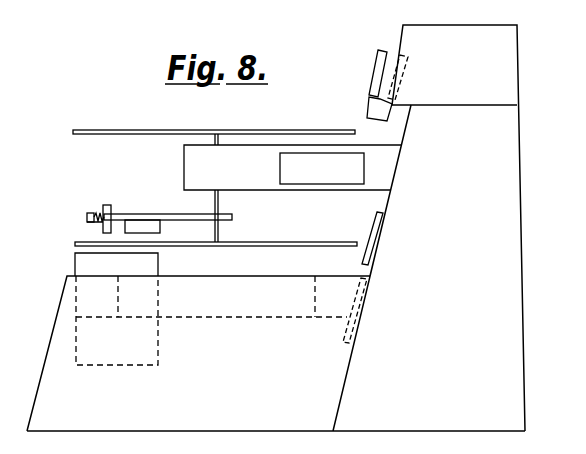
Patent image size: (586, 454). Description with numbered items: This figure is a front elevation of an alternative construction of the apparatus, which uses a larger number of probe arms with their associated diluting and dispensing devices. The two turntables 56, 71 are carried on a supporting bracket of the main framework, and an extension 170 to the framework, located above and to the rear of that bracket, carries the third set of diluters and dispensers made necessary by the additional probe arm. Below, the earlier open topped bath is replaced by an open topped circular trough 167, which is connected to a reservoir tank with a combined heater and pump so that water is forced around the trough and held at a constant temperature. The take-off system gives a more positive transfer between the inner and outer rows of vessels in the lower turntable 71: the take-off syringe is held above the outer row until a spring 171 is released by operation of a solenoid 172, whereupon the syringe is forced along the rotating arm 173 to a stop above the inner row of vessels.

The turntable 56 is at (310, 128).
The turntable 71 is at (310, 242).
The open topped circular trough 167 is at (78, 304).
The extension 170 is at (507, 88).
The spring 171 is at (87, 220).
The solenoid 172 is at (130, 226).
The rotating arm 173 is at (165, 217).